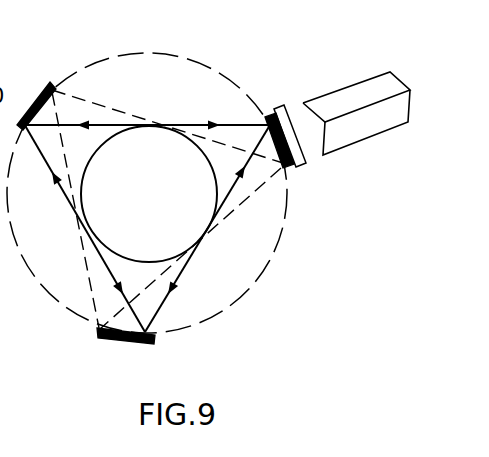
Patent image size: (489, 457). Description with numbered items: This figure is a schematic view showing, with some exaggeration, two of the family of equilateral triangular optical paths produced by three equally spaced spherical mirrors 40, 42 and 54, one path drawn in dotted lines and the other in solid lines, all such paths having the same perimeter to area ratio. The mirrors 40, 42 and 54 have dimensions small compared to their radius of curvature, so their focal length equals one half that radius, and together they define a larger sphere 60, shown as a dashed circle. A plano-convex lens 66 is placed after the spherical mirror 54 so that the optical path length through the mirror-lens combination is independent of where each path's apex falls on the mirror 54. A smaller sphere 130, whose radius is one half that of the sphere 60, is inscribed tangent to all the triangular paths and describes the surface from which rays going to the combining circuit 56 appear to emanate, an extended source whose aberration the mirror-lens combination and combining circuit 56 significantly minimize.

The spherical mirror 40 is at (128, 344).
The spherical mirror 42 is at (33, 83).
The spherical mirror 54 is at (280, 150).
The combining circuit 56 is at (347, 66).
The sphere defined by the mirrors 60 is at (229, 62).
The plano-convex lens 66 is at (290, 117).
The sphere 130 is at (90, 160).